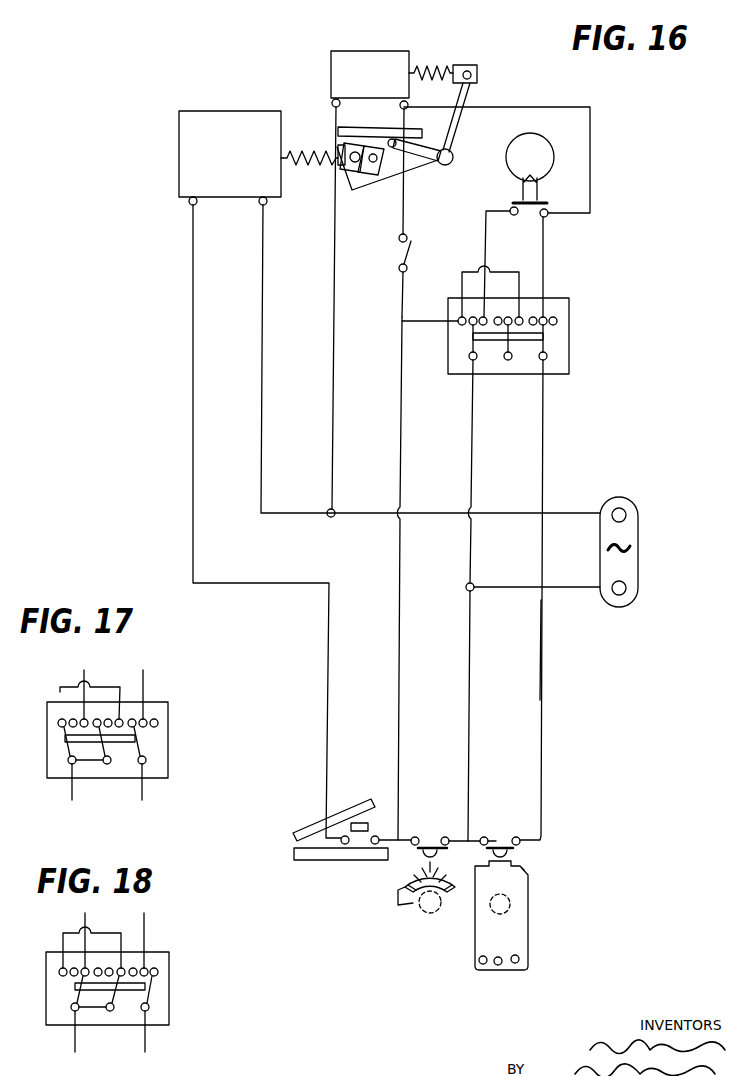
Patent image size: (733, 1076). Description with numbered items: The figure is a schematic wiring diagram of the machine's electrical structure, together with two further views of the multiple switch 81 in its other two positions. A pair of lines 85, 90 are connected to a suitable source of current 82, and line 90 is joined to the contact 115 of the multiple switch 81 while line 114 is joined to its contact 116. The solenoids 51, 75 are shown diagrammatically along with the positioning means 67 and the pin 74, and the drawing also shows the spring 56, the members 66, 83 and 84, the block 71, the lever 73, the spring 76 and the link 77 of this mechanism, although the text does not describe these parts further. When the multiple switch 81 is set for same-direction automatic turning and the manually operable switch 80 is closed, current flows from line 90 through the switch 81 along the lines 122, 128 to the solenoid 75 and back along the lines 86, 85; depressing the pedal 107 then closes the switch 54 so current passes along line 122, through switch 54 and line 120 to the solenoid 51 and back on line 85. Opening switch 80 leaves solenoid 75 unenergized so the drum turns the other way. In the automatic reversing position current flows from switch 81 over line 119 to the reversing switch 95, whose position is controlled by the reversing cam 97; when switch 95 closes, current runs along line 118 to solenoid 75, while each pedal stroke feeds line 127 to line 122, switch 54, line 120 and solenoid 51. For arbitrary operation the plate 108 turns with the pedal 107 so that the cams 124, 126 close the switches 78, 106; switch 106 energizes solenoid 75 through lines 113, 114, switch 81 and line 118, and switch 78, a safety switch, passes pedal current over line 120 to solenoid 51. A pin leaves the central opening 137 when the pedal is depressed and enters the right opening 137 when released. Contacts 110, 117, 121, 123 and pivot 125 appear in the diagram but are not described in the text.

In FIG. 16, the solenoid 51 is at (231, 111).
In FIG. 16, the switch 54 is at (360, 838).
In FIG. 16, the spring 56 is at (284, 164).
In FIG. 16, the pawl 66 is at (358, 165).
In FIG. 16, the positioning means 67 is at (348, 144).
In FIG. 16, the pivot block 71 is at (478, 69).
In FIG. 16, the lever 73 is at (431, 163).
In FIG. 16, the pin 74 is at (398, 132).
In FIG. 16, the solenoid 75 is at (395, 46).
In FIG. 16, the spring 76 is at (440, 64).
In FIG. 16, the link 77 is at (460, 131).
In FIG. 16, the switch 78 is at (436, 838).
In FIG. 16, the manually operable switch 80 is at (400, 266).
In FIG. 16, the multiple switch 81 is at (566, 298).
In FIG. 17, the multiple switch 81 is at (47, 760).
In FIG. 18, the multiple switch 81 is at (46, 1005).
In FIG. 16, the source of current 82 is at (632, 602).
In FIG. 16, the pivot 83 is at (408, 131).
In FIG. 16, the wedge member 84 is at (382, 178).
In FIG. 16, the line 85 is at (263, 473).
In FIG. 16, the line 86 is at (334, 471).
In FIG. 16, the line 90 is at (472, 457).
In FIG. 17, the line 90 is at (72, 795).
In FIG. 18, the line 90 is at (75, 1045).
In FIG. 16, the reversing switch 95 is at (526, 213).
In FIG. 16, the reversing cam 97 is at (544, 150).
In FIG. 16, the switch 106 is at (492, 838).
In FIG. 16, the pedal 107 is at (333, 818).
In FIG. 16, the plate 108 is at (520, 931).
In FIG. 16, the contact 110 is at (510, 852).
In FIG. 16, the line 113 is at (471, 650).
In FIG. 16, the line 114 is at (542, 648).
In FIG. 17, the line 114 is at (142, 795).
In FIG. 18, the line 114 is at (145, 1045).
In FIG. 16, the contact 115 is at (470, 359).
In FIG. 16, the contact 116 is at (548, 356).
In FIG. 16, the contact 117 is at (520, 838).
In FIG. 16, the line 118 is at (590, 196).
In FIG. 17, the line 118 is at (143, 677).
In FIG. 18, the line 118 is at (144, 927).
In FIG. 16, the line 119 is at (486, 225).
In FIG. 17, the line 119 is at (84, 670).
In FIG. 18, the line 119 is at (85, 917).
In FIG. 16, the line 120 is at (193, 473).
In FIG. 16, the contact 121 is at (413, 836).
In FIG. 16, the line 122 is at (418, 324).
In FIG. 16, the contact 123 is at (420, 852).
In FIG. 16, the cam 124 is at (444, 873).
In FIG. 16, the pivot 125 is at (448, 896).
In FIG. 16, the cam 126 is at (522, 868).
In FIG. 16, the line 127 is at (468, 272).
In FIG. 16, the line 128 is at (403, 214).
In FIG. 16, the opening 137 is at (519, 960).